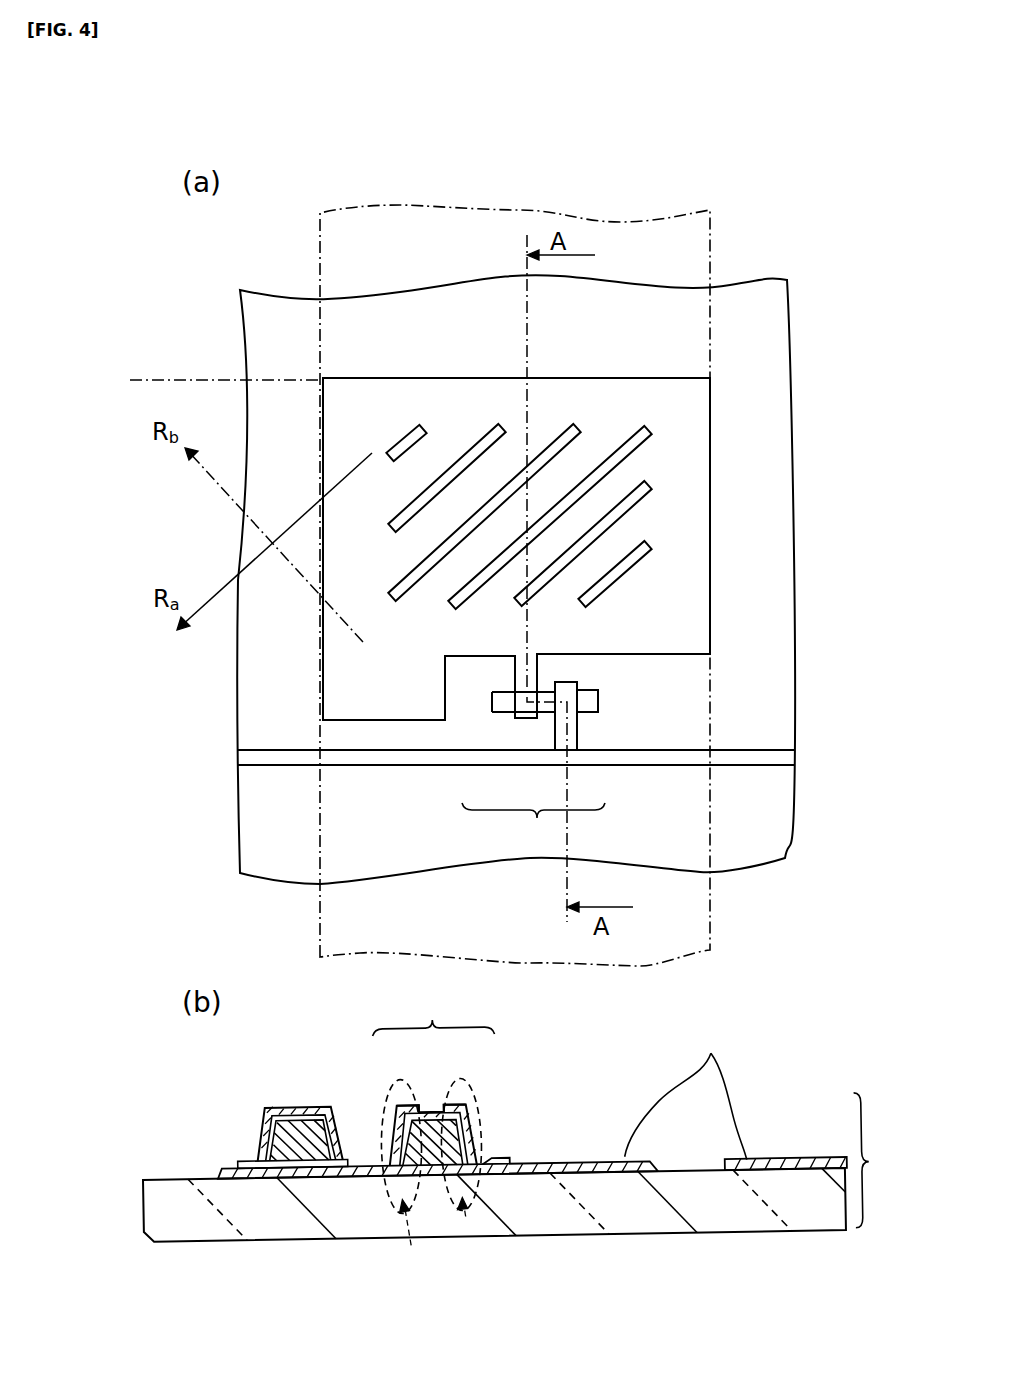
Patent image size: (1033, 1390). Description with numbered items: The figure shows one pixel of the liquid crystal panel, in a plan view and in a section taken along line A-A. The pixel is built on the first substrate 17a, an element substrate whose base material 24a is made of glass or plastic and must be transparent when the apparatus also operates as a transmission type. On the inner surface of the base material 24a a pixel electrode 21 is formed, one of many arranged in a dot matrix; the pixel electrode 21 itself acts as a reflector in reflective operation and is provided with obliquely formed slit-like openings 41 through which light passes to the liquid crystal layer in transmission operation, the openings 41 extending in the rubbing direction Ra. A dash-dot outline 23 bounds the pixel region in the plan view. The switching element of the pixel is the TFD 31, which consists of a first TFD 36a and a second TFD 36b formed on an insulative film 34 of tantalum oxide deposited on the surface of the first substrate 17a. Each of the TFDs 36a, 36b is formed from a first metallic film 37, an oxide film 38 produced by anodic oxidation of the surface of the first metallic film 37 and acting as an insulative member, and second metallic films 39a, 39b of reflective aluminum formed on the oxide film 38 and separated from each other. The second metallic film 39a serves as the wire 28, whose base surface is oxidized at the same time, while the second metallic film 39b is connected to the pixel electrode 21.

The first substrate 17a is at (728, 290).
The pixel region / black matrix boundary 23 is at (633, 226).
The pixel electrode 21 is at (708, 534).
The slit-like openings 41 is at (615, 570).
The wire 28 is at (678, 753).
The oxide film 38 is at (545, 690).
The first metallic film 37 is at (297, 1156).
The second metallic film 39a is at (593, 700).
The second metallic film 39b is at (525, 710).
The first TFD 36a is at (583, 725).
The second TFD 36b is at (503, 727).
The TFD 31 is at (488, 919).
The insulative film 34 is at (227, 1170).
The base material 24a is at (655, 1226).